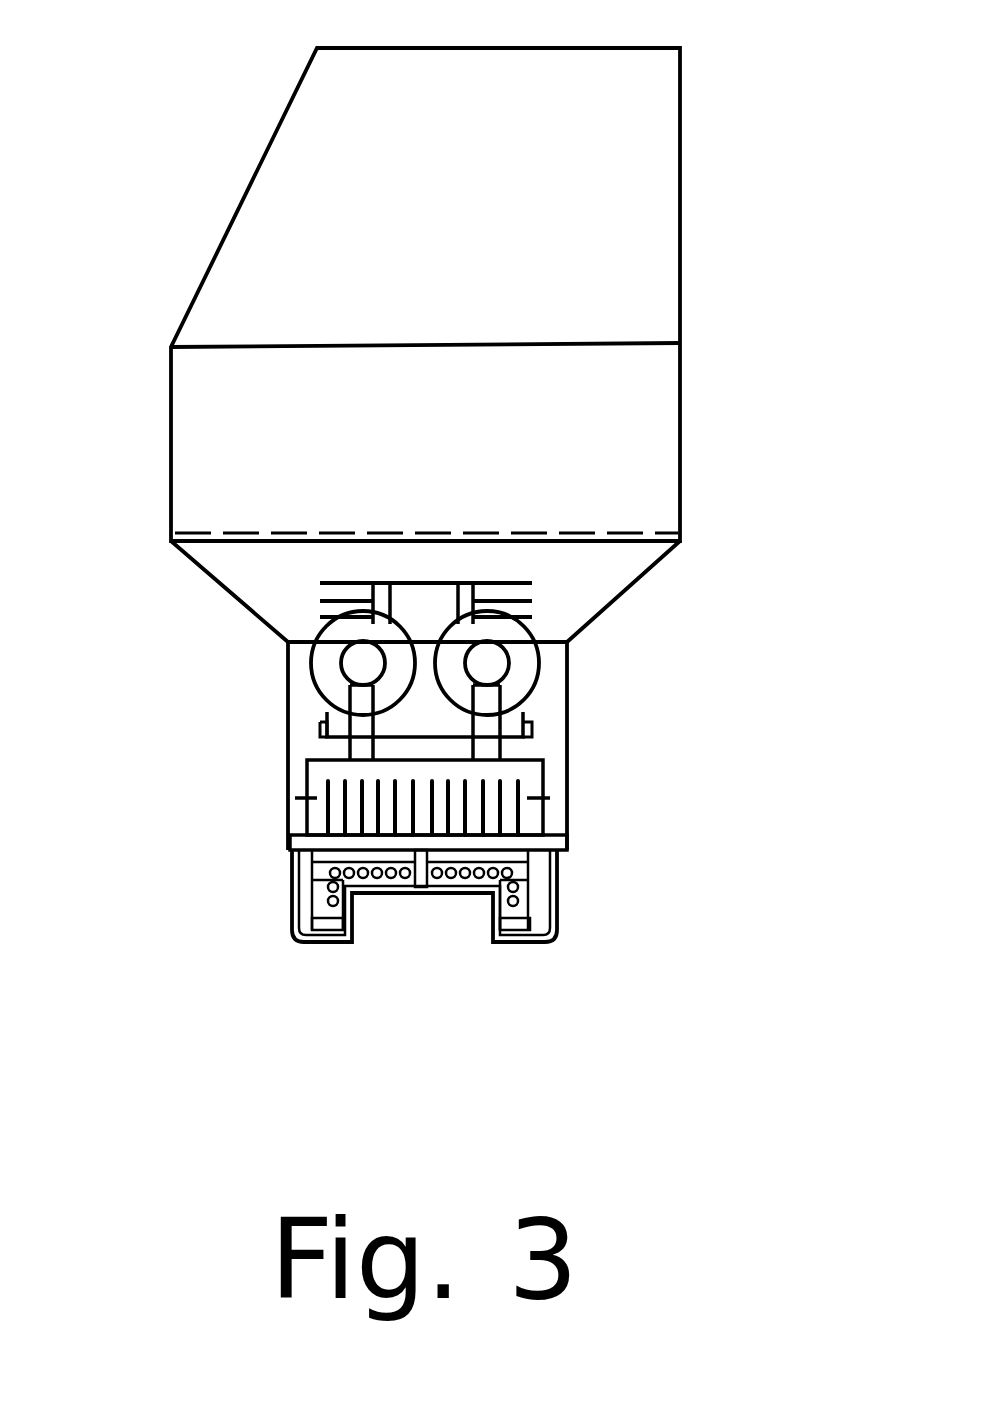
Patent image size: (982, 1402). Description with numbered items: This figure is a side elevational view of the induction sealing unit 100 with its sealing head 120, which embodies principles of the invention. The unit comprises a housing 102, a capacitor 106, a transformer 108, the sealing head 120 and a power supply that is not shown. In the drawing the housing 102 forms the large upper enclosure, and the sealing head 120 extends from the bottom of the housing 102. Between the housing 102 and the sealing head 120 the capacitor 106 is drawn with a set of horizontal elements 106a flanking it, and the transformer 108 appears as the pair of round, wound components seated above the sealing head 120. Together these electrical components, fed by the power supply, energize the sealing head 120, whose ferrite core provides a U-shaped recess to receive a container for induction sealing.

The relay / electrical device 100 is at (718, 143).
The housing 102 is at (256, 175).
The capacitor 106 is at (420, 610).
The terminal fins 106a is at (338, 590).
The transformer 108 is at (523, 671).
The sealing head 120 is at (284, 891).